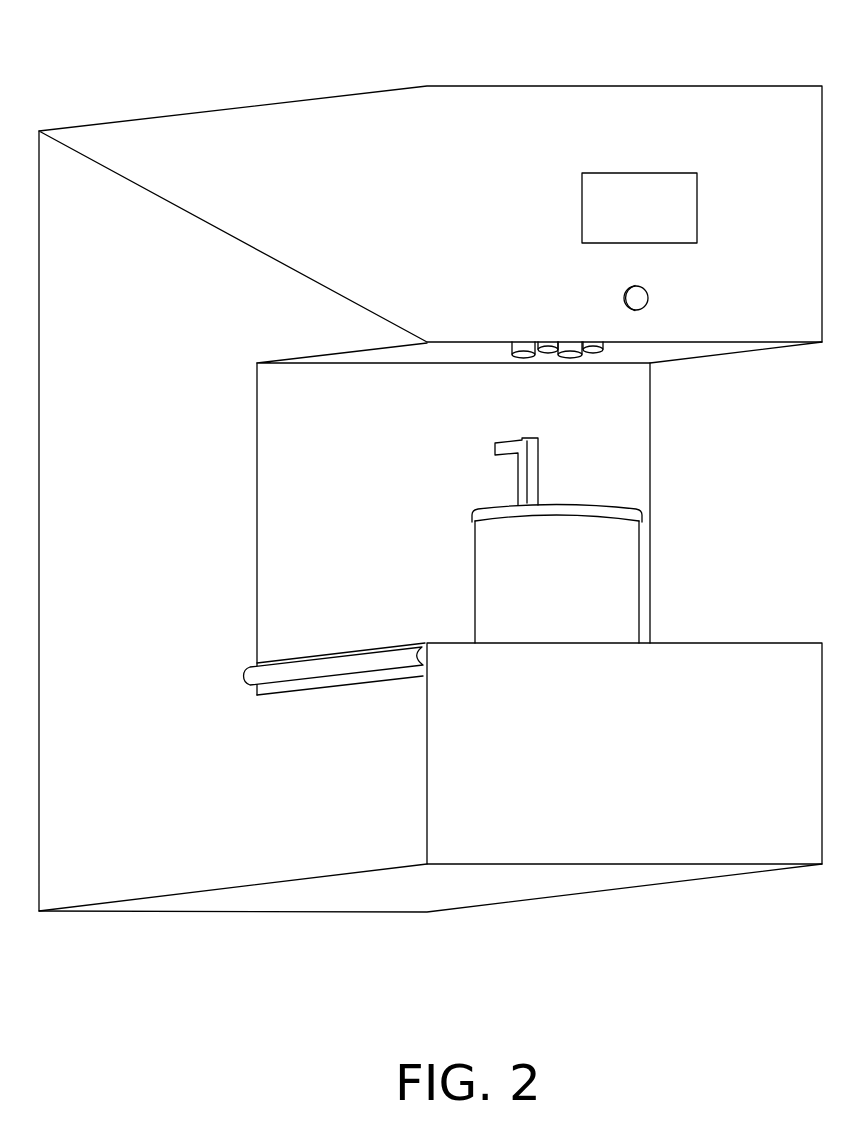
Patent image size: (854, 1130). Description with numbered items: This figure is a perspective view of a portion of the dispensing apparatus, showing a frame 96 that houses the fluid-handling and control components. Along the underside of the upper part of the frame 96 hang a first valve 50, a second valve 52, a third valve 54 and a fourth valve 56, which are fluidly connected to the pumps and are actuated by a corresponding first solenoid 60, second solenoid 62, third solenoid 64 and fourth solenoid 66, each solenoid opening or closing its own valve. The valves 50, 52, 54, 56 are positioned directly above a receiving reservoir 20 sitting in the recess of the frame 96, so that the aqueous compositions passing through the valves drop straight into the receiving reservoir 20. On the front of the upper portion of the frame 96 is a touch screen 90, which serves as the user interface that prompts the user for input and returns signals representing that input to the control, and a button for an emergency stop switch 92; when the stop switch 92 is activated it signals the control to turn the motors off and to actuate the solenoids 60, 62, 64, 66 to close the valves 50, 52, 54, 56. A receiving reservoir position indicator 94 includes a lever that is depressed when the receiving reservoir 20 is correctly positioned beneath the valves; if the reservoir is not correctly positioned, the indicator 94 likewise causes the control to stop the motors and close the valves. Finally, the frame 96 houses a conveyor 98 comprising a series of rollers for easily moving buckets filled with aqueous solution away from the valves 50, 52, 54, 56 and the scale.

The receiving reservoir 20 is at (473, 563).
The first valve 50 is at (442, 383).
The second valve 52 is at (500, 301).
The third valve 54 is at (681, 382).
The fourth valve 56 is at (593, 398).
The first solenoid 60 is at (508, 357).
The second solenoid 62 is at (540, 342).
The third solenoid 64 is at (603, 356).
The fourth solenoid 66 is at (566, 359).
The touch screen 90 is at (697, 210).
The emergency stop switch 92 is at (648, 298).
The receiving reservoir position indicator 94 is at (518, 482).
The frame 96 is at (268, 98).
The conveyor 98 is at (285, 688).